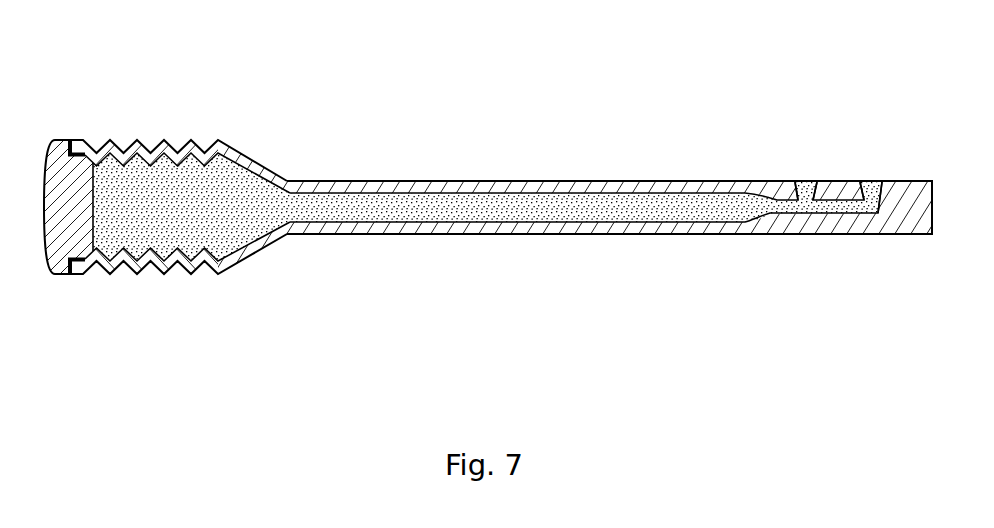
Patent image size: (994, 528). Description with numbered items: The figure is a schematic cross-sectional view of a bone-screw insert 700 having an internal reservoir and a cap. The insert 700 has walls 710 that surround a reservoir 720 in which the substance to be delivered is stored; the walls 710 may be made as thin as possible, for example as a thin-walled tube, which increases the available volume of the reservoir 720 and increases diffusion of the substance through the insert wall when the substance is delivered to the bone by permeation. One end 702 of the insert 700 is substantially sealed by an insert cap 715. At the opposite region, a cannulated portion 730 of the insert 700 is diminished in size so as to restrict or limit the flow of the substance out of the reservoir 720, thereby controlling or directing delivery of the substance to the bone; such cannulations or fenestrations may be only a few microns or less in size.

The insert 700 is at (497, 198).
The one end 702 is at (167, 111).
The walls 710 is at (435, 189).
The insert cap 715 is at (48, 154).
The reservoir 720 is at (303, 200).
The cannulated portion 730 is at (805, 204).